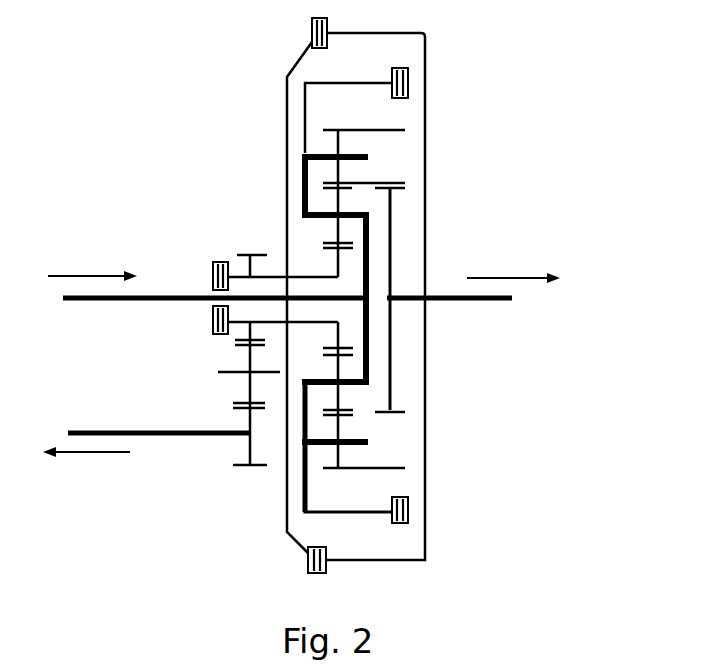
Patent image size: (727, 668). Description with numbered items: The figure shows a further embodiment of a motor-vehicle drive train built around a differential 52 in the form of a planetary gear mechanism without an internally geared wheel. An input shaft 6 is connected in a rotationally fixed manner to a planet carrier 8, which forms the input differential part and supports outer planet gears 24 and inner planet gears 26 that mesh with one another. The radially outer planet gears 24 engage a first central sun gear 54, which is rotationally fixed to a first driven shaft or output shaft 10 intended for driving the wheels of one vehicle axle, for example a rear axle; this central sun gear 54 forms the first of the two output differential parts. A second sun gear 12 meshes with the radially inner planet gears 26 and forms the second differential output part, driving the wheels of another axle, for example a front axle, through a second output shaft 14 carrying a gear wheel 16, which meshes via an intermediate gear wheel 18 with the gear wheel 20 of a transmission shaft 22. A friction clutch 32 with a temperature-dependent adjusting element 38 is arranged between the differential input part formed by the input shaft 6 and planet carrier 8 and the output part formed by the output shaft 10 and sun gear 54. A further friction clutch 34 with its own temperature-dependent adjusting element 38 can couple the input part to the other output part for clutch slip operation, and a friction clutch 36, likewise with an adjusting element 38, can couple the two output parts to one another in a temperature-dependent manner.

The input shaft 6 is at (148, 293).
The planet carrier 8 is at (303, 178).
The output shaft 10 is at (442, 298).
The second sun gear 12 is at (337, 277).
The second output shaft 14 is at (275, 277).
The gear wheel 16 is at (237, 345).
The intermediate gear wheel 18 is at (247, 393).
The gear wheel 20 is at (247, 456).
The transmission shaft 22 is at (173, 438).
The outer planet gears 24 is at (388, 468).
The inner planet gears 26 is at (340, 393).
The friction clutch 32 is at (408, 85).
The friction clutch 34 is at (213, 265).
The friction clutch 36 is at (308, 563).
The temperature-dependent adjusting element 38 is at (213, 286).
The differential 52 is at (250, 126).
The first central sun gear 54 is at (392, 235).